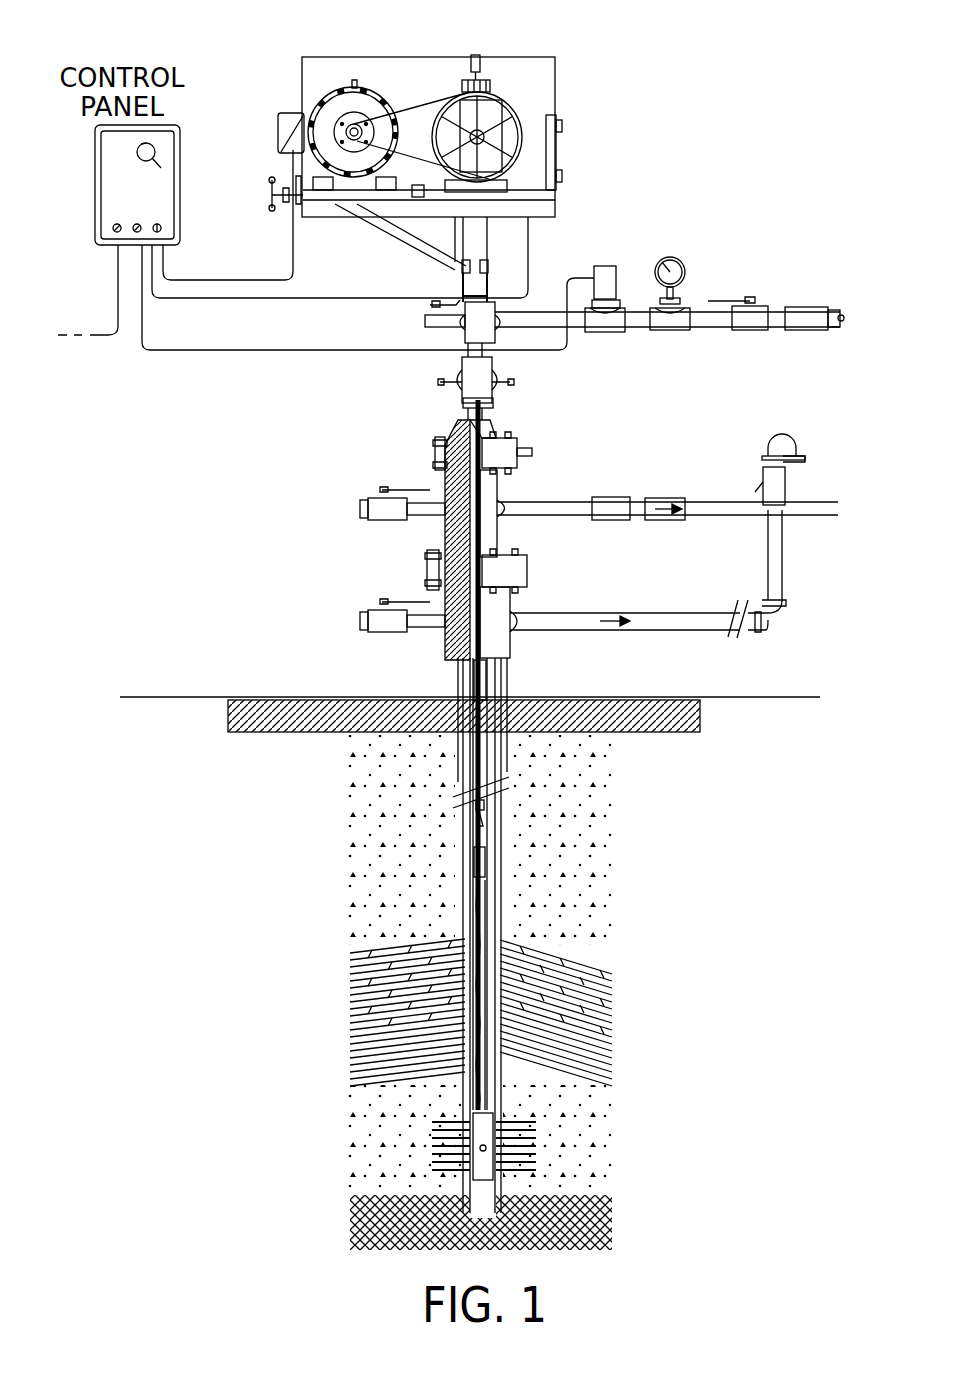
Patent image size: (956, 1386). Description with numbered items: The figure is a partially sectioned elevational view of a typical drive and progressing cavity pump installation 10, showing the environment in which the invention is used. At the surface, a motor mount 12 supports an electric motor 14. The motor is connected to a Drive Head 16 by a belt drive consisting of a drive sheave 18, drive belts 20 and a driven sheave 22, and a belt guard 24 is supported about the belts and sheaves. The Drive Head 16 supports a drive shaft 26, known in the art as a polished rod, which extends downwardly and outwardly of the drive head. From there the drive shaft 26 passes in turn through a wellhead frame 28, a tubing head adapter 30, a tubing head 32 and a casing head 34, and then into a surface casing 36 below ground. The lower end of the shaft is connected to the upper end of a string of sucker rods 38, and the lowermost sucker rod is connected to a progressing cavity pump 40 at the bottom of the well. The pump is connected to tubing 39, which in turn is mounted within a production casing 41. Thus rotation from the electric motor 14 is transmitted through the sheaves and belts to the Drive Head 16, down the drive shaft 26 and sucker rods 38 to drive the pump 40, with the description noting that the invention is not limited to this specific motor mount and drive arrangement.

The drive and progressing cavity pump installation 10 is at (328, 463).
The motor mount 12 is at (558, 170).
The electric motor 14 is at (312, 95).
The Drive Head 16 is at (524, 143).
The drive sheave 18 is at (358, 124).
The drive belts 20 is at (418, 100).
The driven sheave 22 is at (521, 133).
The belt guard 24 is at (490, 57).
The drive shaft 26 is at (490, 668).
The wellhead frame 28 is at (495, 268).
The tubing head adapter 30 is at (520, 440).
The tubing head 32 is at (507, 492).
The casing head 34 is at (530, 570).
The surface casing 36 is at (507, 690).
The sucker rods 38 is at (481, 824).
The tubing 39 is at (490, 845).
The progressing cavity pump 40 is at (488, 905).
The production casing 41 is at (499, 886).